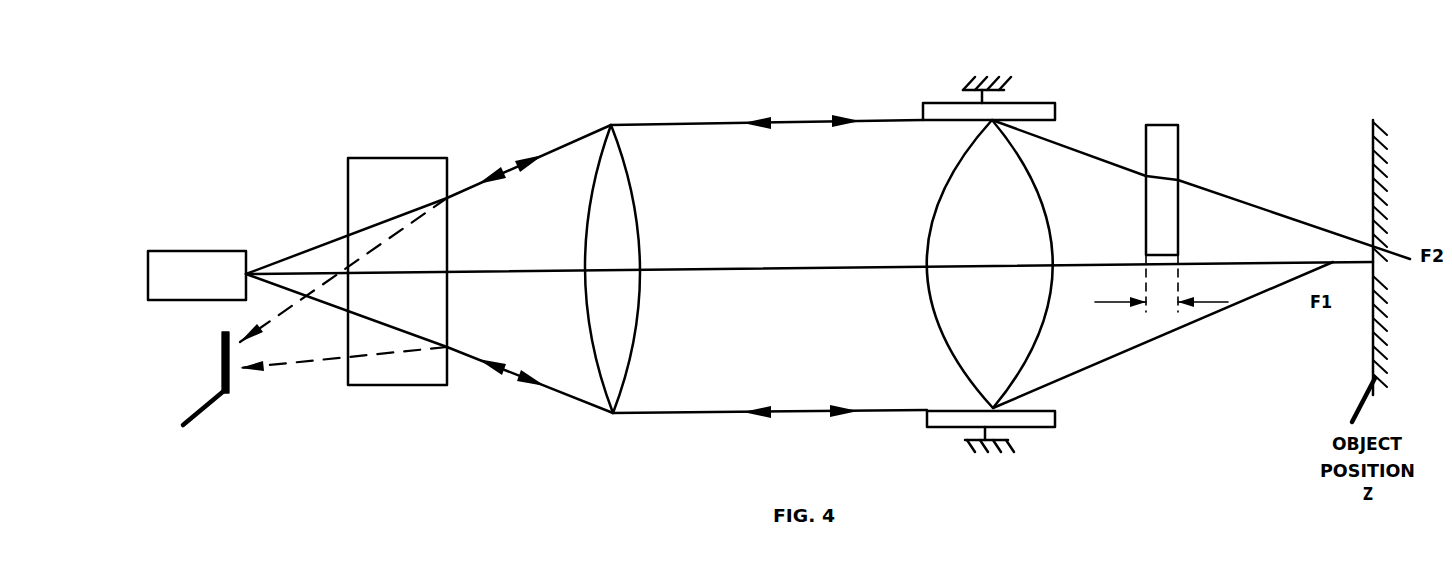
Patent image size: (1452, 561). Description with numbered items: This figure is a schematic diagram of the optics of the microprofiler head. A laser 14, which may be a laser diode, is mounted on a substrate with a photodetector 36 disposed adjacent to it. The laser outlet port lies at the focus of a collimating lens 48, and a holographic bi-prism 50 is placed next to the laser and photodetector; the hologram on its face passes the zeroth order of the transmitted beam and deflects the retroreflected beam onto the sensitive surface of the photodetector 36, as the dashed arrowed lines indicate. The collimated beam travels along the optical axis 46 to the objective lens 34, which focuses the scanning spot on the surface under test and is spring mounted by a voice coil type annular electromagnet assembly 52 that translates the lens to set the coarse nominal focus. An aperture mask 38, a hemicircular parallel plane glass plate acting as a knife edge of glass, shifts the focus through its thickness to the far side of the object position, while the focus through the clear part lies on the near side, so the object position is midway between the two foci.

The laser 14 is at (208, 257).
The holographic bi-prism 50 is at (430, 180).
The photodetector 36 is at (210, 404).
The collimating lens 48 is at (613, 250).
The optical axis 46 is at (772, 257).
The voice coil type annular electromagnet assembly 52 is at (1025, 425).
The objective lens 34 is at (957, 308).
The aperture mask 38 is at (1177, 157).